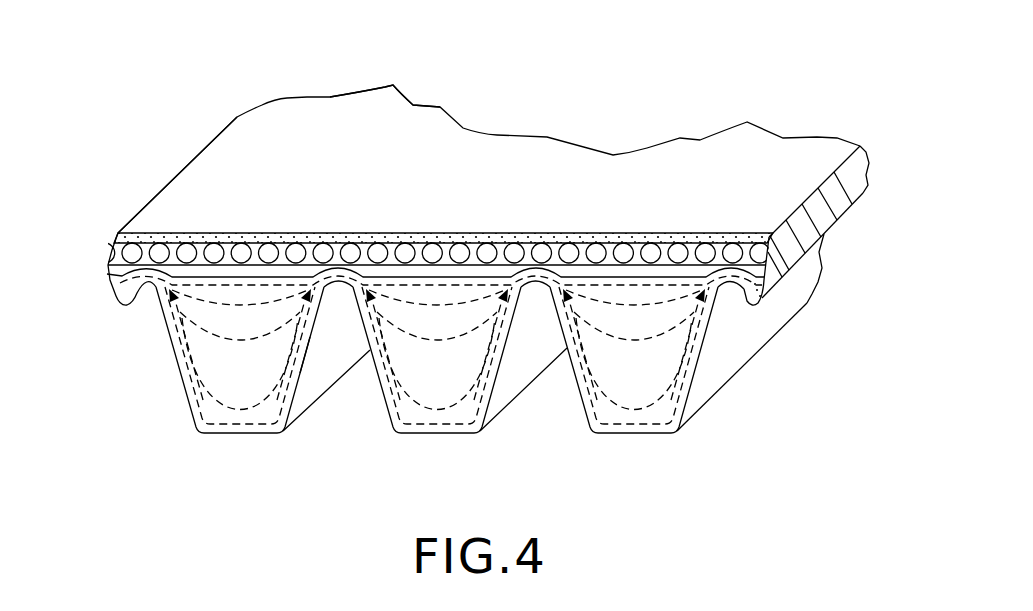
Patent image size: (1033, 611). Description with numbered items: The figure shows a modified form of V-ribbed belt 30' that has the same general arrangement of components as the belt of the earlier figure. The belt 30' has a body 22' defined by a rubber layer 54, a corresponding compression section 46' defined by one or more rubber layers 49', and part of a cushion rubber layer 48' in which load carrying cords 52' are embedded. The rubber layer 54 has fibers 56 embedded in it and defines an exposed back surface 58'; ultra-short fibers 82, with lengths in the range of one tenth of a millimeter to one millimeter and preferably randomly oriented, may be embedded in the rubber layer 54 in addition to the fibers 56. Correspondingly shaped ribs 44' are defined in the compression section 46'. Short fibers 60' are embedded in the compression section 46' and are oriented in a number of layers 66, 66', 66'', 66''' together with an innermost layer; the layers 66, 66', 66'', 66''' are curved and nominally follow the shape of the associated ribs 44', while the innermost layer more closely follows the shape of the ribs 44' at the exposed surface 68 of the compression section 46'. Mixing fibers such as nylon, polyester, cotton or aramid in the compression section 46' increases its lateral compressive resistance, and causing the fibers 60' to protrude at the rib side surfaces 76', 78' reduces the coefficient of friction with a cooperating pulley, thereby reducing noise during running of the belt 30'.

The body 22' is at (493, 191).
The exposed back surface 58' is at (385, 84).
The fibers 56 is at (157, 232).
The ultra-short fibers 82 is at (193, 233).
The rubber layer 54 is at (363, 232).
The load carrying cords 52' is at (434, 221).
The cushion rubber layer 48' is at (435, 225).
The V-ribbed belt 30' is at (211, 222).
The compression section 46' is at (759, 335).
The ribs 44' is at (450, 389).
The short fibers 60' is at (434, 402).
The exposed surface 68 is at (316, 380).
The rib side surface 78' is at (338, 387).
The rib side surface 76' is at (409, 296).
The layer 66 is at (389, 321).
The layer 66' is at (178, 347).
The layer 66'' is at (379, 380).
The layer 66''' is at (277, 401).
The rubber layers 49' is at (602, 379).